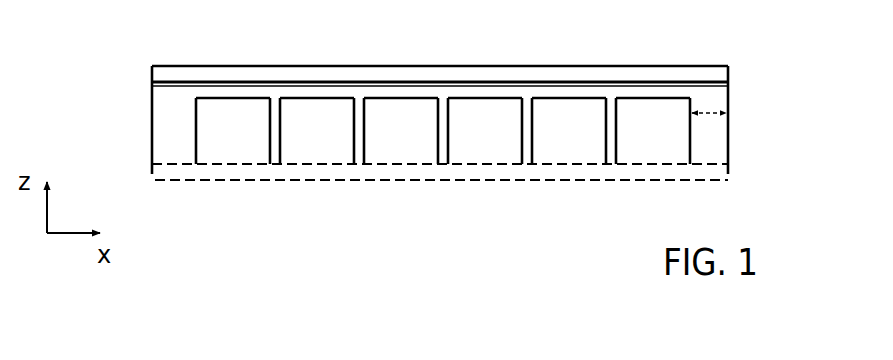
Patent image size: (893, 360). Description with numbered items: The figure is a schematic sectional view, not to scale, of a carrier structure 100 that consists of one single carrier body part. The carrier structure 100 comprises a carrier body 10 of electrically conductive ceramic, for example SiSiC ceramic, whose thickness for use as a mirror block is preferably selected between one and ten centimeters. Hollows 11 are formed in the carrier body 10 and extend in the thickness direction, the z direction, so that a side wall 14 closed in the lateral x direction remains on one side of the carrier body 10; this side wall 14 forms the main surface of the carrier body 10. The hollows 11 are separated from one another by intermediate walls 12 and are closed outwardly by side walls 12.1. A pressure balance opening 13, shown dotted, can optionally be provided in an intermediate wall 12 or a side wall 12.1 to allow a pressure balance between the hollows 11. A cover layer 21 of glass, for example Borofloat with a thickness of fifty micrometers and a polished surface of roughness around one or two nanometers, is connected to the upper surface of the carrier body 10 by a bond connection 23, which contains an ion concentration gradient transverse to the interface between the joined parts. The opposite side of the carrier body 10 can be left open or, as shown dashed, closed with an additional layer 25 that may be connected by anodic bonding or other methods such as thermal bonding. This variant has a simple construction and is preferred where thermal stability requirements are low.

The carrier structure 100 is at (562, 49).
The carrier body 10 is at (168, 135).
The cover layer 21 is at (305, 72).
The bond connection 23 is at (152, 83).
The side wall 14 is at (460, 94).
The intermediate wall 12 is at (357, 135).
The side wall 12.1 is at (697, 135).
The hollow 11 is at (482, 135).
The pressure balance opening 13 is at (728, 113).
The additional layer 25 is at (267, 172).